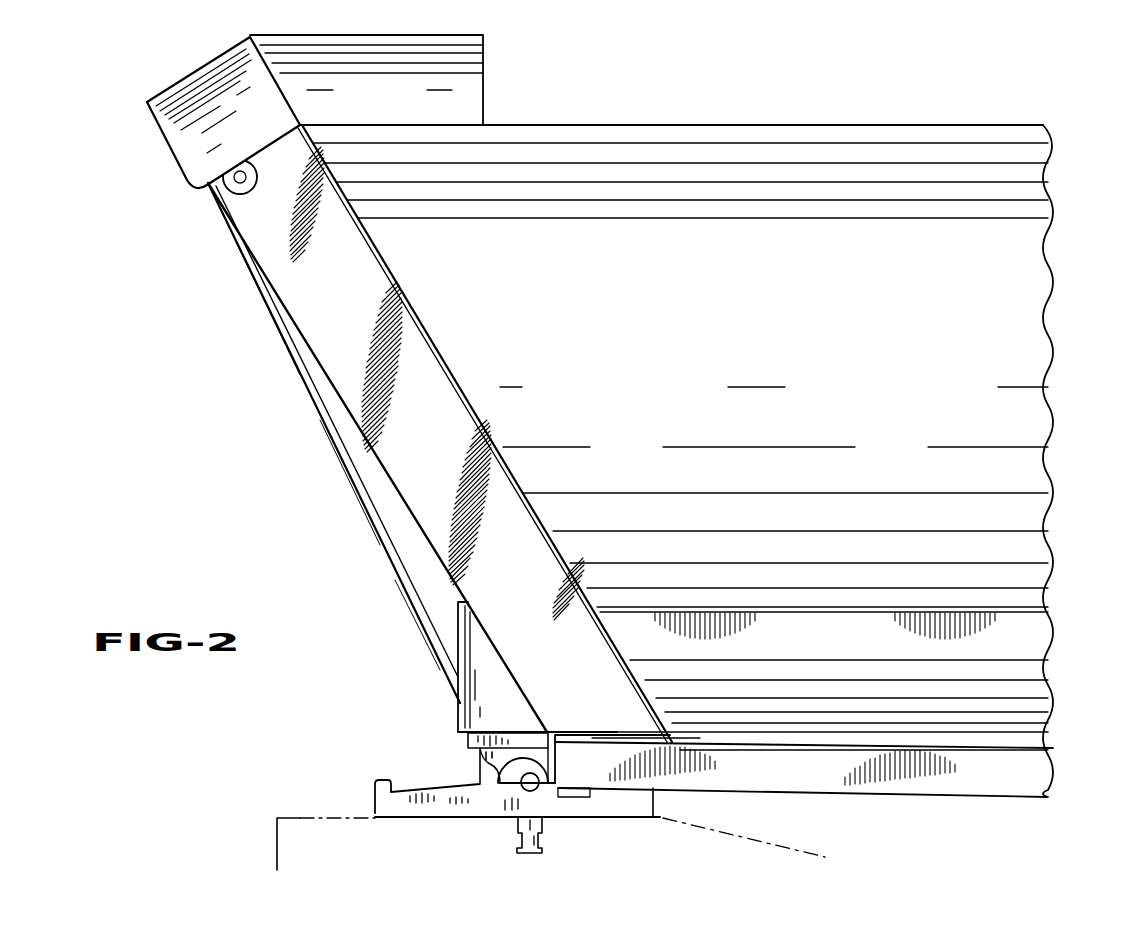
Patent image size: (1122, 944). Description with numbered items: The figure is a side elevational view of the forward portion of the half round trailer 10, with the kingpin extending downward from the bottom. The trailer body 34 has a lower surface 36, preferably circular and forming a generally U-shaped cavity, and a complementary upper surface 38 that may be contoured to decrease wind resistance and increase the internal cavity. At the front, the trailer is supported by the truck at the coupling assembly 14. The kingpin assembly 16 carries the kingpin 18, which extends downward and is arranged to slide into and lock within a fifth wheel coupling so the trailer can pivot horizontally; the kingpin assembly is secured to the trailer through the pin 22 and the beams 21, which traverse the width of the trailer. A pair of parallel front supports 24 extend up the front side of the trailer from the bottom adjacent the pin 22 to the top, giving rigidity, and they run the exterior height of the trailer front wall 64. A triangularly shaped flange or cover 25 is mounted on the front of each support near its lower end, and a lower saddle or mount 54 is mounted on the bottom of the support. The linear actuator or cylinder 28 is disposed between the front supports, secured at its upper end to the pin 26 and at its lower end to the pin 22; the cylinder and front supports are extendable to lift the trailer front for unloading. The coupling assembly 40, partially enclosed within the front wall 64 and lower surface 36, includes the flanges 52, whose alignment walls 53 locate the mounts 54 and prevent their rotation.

The half round trailer 10 is at (866, 110).
The coupling assembly 14 is at (366, 747).
The kingpin assembly 16 is at (368, 782).
The kingpin 18 is at (543, 827).
The beams 21 is at (925, 785).
The pin 22 is at (527, 787).
The front supports 24 is at (412, 467).
The triangularly shaped flange or cover 25 is at (486, 680).
The pin 26 is at (240, 178).
The linear actuator or cylinder 28 is at (385, 548).
The body 34 is at (995, 333).
The lower surface 36 is at (1015, 735).
The upper surface 38 is at (714, 124).
The coupling assembly 40 is at (460, 750).
The flanges 52 is at (622, 735).
The alignment walls 53 is at (468, 737).
The mounts 54 is at (488, 768).
The trailer front wall 64 is at (555, 548).